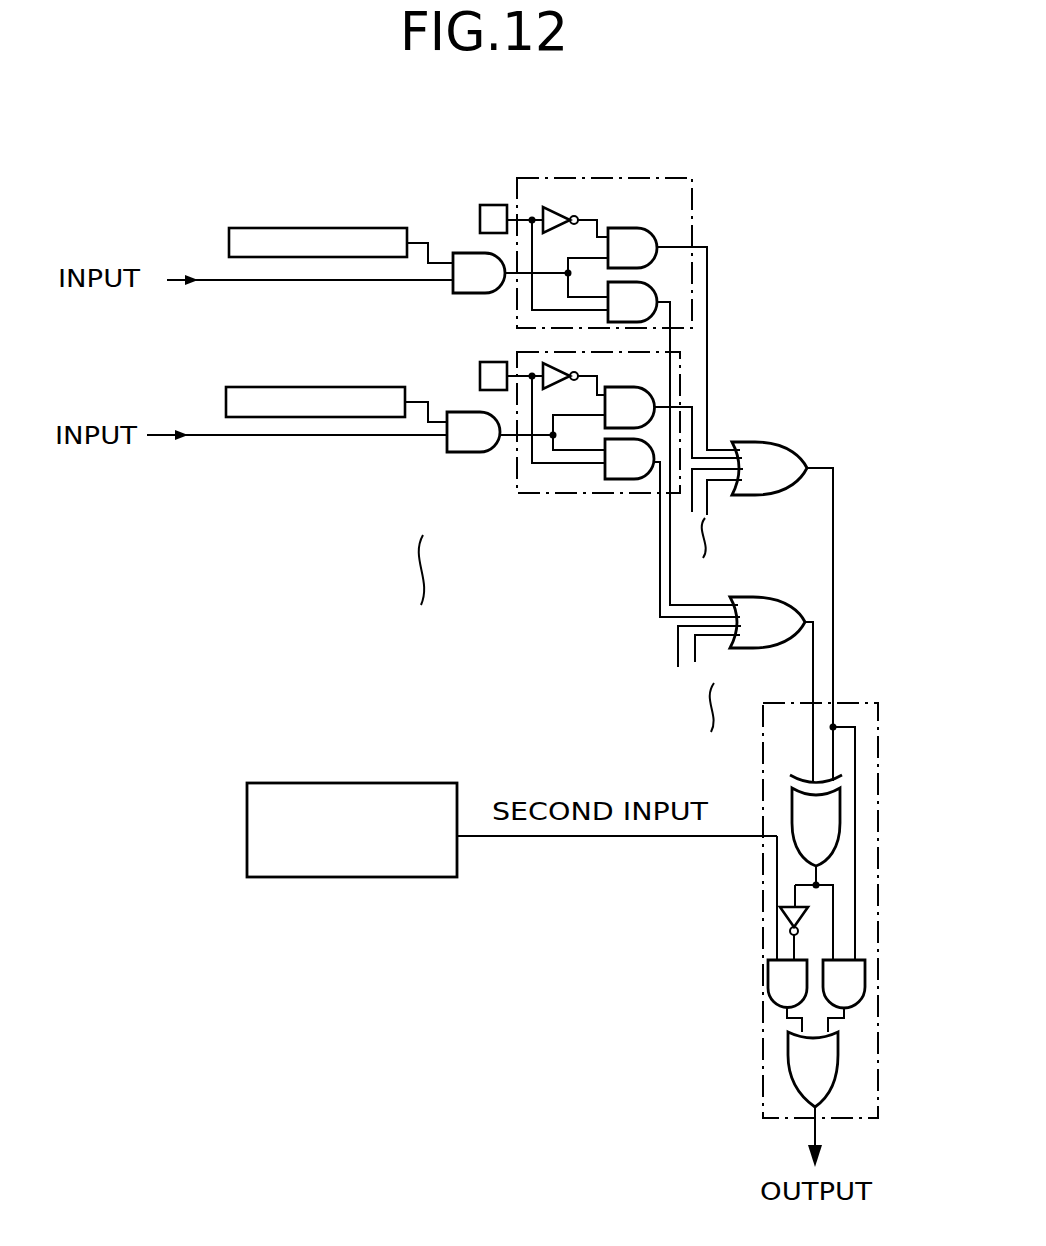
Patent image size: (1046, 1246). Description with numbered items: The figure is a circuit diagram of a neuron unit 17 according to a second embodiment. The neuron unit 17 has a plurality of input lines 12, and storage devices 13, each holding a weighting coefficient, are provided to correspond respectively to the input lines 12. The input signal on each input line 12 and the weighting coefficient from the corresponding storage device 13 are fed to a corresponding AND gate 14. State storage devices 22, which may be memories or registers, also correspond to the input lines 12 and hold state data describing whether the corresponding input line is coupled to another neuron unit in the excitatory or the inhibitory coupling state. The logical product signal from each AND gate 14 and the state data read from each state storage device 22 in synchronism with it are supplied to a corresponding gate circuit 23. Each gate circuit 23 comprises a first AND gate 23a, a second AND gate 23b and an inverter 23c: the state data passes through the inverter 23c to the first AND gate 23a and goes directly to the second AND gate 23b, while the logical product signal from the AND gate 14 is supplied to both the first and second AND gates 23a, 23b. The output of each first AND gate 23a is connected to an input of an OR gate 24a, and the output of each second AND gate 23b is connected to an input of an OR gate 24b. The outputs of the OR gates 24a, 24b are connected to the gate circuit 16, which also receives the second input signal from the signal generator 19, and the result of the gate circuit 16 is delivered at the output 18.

The input line 12 is at (215, 278).
The storage device 13 is at (313, 228).
The AND gate 14 is at (460, 253).
The gate circuit 16 is at (763, 872).
The neuron unit 17 is at (733, 200).
The output terminal 18 is at (813, 1132).
The signal generator 19 is at (415, 880).
The state storage device 22 is at (493, 205).
The gate circuit 23 is at (680, 178).
The first AND gate 23a is at (608, 228).
The second AND gate 23b is at (670, 283).
The inverter 23c is at (553, 207).
The OR gate 24a is at (757, 442).
The OR gate 24b is at (765, 592).